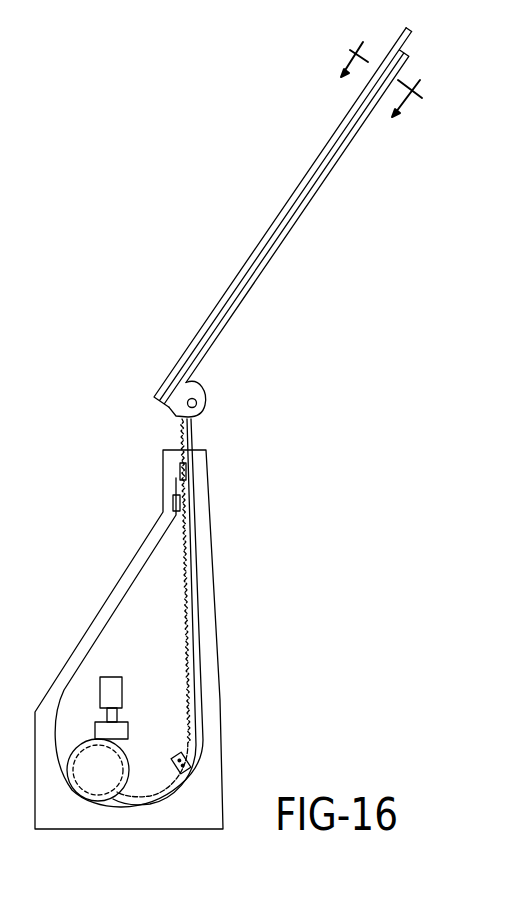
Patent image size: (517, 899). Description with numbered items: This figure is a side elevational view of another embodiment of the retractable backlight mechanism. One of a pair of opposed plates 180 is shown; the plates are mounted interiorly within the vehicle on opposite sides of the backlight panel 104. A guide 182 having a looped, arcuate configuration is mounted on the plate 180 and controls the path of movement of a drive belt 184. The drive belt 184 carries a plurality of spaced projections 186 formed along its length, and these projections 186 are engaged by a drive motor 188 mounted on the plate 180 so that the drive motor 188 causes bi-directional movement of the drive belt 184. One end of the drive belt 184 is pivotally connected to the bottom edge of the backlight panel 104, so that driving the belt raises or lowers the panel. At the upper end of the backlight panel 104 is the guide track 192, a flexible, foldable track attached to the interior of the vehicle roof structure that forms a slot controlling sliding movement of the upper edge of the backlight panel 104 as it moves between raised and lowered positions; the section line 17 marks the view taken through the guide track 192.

The backlight panel 104 is at (296, 222).
The guide track 192 is at (403, 34).
The section line 17- 17 is at (376, 98).
The plate 180 is at (165, 480).
The guide 182 is at (170, 566).
The drive belt 184 is at (197, 638).
The spaced projections 186 is at (190, 692).
The drive motor 188 is at (100, 787).